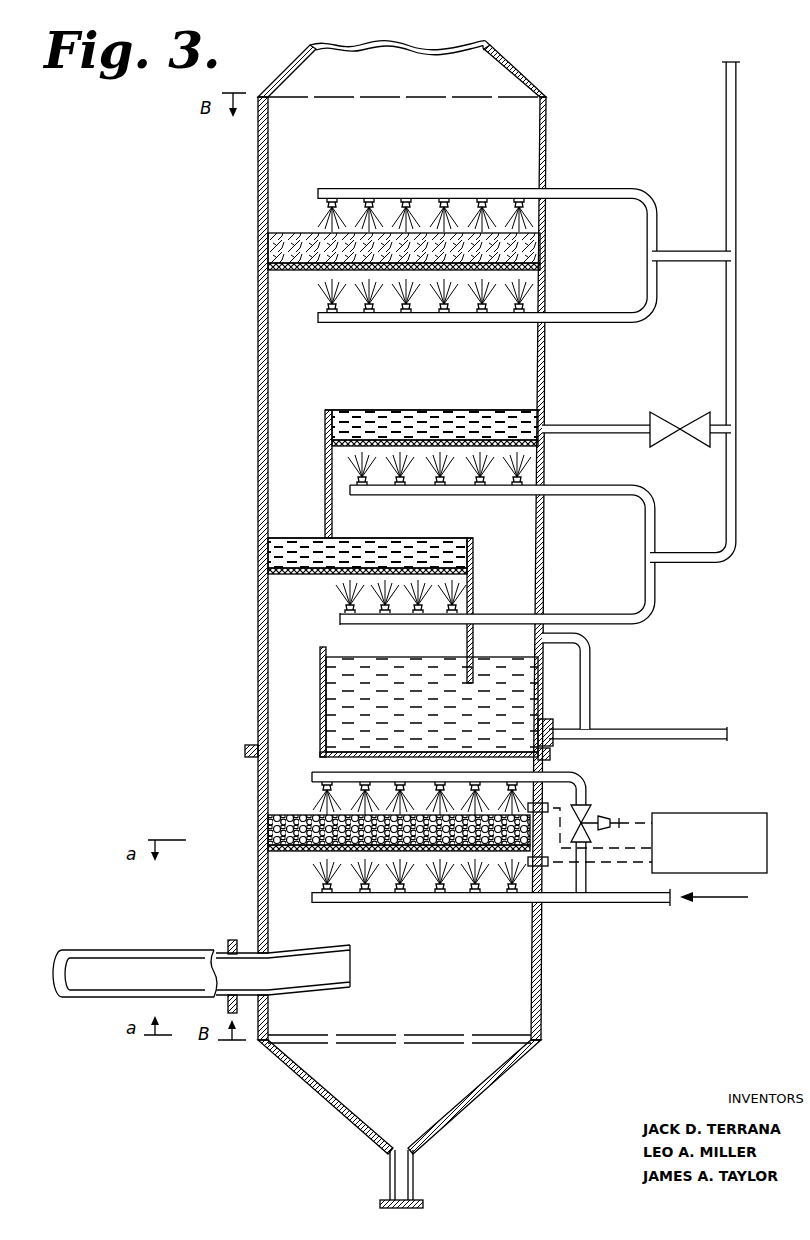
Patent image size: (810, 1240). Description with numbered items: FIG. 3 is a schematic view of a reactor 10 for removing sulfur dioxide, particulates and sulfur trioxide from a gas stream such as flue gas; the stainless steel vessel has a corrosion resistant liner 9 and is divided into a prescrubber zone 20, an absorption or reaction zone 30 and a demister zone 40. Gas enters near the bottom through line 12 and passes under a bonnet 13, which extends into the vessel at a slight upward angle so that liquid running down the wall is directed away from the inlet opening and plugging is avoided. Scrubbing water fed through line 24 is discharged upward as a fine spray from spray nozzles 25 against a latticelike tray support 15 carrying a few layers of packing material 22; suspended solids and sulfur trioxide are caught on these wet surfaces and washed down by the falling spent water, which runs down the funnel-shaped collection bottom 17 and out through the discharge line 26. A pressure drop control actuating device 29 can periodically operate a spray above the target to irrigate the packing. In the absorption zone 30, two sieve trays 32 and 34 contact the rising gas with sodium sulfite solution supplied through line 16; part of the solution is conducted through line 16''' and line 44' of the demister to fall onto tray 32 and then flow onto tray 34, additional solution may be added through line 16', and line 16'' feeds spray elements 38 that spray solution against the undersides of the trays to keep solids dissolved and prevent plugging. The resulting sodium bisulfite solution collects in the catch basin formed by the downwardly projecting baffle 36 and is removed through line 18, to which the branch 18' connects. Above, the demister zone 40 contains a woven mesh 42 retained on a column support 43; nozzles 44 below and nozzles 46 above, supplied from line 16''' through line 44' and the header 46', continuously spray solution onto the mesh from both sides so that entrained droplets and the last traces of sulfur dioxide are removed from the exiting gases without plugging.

The corrosion resistant material liner 9 is at (532, 985).
The reactor 10 is at (255, 136).
The line 12 is at (150, 950).
The bonnet 13 is at (310, 948).
The tray support 15 is at (266, 850).
The line 16 is at (722, 310).
The line 16' is at (636, 410).
The line 16'' is at (495, 555).
The line 16''' is at (691, 235).
The collection bottom 17 is at (458, 1115).
The line 18 is at (632, 727).
The outlet branch pipe 18' is at (593, 683).
The prescrubber zone 20 is at (418, 979).
The packing material 22 is at (298, 802).
The line 24 is at (640, 905).
The spray nozzles 25 is at (452, 890).
The spent scrubbing water discharge line 26 is at (388, 1186).
The actuating device 29 is at (767, 815).
The absorption or reaction zone 30 is at (390, 522).
The tray 32 is at (544, 446).
The tray 34 is at (266, 573).
The baffle 36 is at (318, 672).
The spray elements 38 is at (442, 482).
The demister zone 40 is at (374, 249).
The woven mesh 42 is at (264, 238).
The column support 43 is at (266, 268).
The nozzles 44 is at (425, 314).
The line 44' is at (485, 289).
The nozzles 46 is at (425, 190).
The upper spray header 46' is at (485, 199).